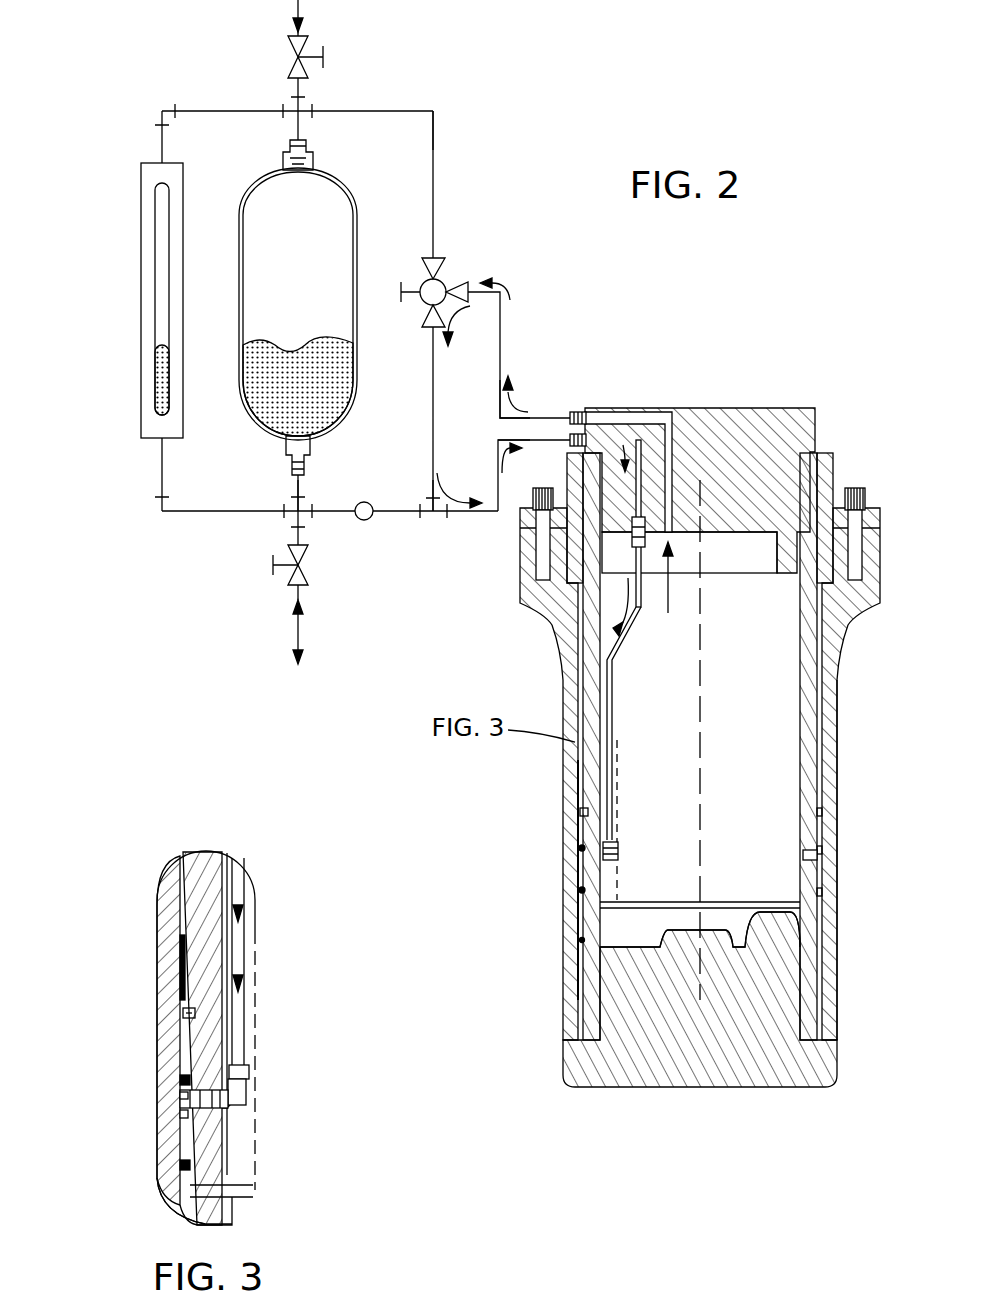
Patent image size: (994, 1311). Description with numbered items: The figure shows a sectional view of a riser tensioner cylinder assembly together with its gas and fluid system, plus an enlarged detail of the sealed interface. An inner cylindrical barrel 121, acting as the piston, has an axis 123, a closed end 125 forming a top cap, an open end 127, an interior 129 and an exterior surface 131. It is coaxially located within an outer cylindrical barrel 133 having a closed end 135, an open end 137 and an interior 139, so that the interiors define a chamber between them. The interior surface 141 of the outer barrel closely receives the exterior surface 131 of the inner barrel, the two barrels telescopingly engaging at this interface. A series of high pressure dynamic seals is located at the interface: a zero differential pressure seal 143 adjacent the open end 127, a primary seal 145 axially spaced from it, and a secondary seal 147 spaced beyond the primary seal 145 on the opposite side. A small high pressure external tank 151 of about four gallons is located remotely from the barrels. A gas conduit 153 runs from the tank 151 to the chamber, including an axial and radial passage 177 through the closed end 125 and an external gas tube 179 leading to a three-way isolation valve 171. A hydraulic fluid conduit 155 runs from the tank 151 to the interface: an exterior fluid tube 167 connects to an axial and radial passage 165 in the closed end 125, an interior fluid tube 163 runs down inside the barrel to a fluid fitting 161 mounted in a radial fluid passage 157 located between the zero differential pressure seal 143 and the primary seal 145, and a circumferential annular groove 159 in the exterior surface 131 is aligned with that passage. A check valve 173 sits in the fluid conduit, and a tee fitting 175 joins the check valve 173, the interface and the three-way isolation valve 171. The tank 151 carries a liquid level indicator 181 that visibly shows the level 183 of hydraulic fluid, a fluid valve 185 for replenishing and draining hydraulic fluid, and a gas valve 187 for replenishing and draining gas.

In FIG. 2, the inner cylindrical barrel 121 is at (797, 735).
In FIG. 3, the inner cylindrical barrel 121 is at (201, 850).
In FIG. 2, the axis 123 is at (703, 622).
In FIG. 2, the closed end 125 is at (770, 435).
In FIG. 2, the open end 127 is at (700, 947).
In FIG. 2, the interior 129 is at (765, 846).
In FIG. 2, the exterior surface 131 is at (570, 832).
In FIG. 3, the exterior surface 131 is at (170, 1043).
In FIG. 2, the outer cylindrical barrel 133 is at (575, 940).
In FIG. 3, the outer cylindrical barrel 133 is at (170, 892).
In FIG. 2, the closed end 135 is at (669, 1073).
In FIG. 3, the closed end 135 is at (220, 1215).
In FIG. 2, the open end 137 is at (822, 742).
In FIG. 2, the interior 139 is at (655, 935).
In FIG. 2, the interior surface 141 is at (600, 832).
In FIG. 3, the interior surface 141 is at (200, 1043).
In FIG. 2, the zero differential pressure seal 143 is at (579, 890).
In FIG. 3, the zero differential pressure seal 143 is at (180, 1165).
In FIG. 2, the primary seal 145 is at (579, 848).
In FIG. 3, the primary seal 145 is at (180, 1080).
In FIG. 2, the secondary seal 147 is at (582, 808).
In FIG. 3, the secondary seal 147 is at (182, 1013).
In FIG. 2, the external tank 151 is at (258, 186).
In FIG. 2, the gas conduit 153 is at (433, 148).
In FIG. 2, the hydraulic fluid conduit 155 is at (335, 511).
In FIG. 3, the radial fluid passage 157 is at (180, 1116).
In FIG. 3, the circumferential annular groove 159 is at (180, 1097).
In FIG. 2, the fluid fitting 161 is at (618, 862).
In FIG. 3, the fluid fitting 161 is at (250, 1105).
In FIG. 2, the interior fluid tube 163 is at (613, 692).
In FIG. 3, the interior fluid tube 163 is at (246, 930).
In FIG. 2, the axial and radial passage 165 is at (592, 414).
In FIG. 2, the exterior fluid tube 167 is at (545, 442).
In FIG. 2, the three-way isolation valve 171 is at (447, 285).
In FIG. 2, the check valve 173 is at (366, 521).
In FIG. 2, the tee fitting 175 is at (436, 518).
In FIG. 2, the axial and radial passage 177 is at (668, 486).
In FIG. 2, the external gas tube 179 is at (551, 415).
In FIG. 2, the liquid level indicator 181 is at (140, 232).
In FIG. 2, the level 183 is at (155, 345).
In FIG. 2, the fluid valve 185 is at (290, 580).
In FIG. 2, the gas valve 187 is at (287, 48).